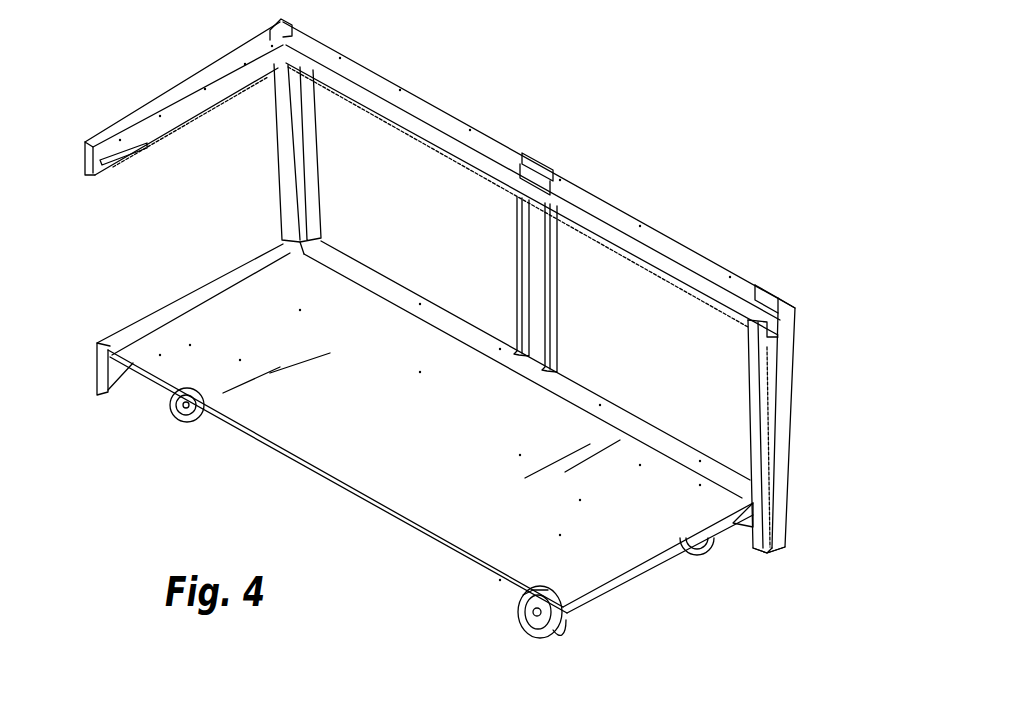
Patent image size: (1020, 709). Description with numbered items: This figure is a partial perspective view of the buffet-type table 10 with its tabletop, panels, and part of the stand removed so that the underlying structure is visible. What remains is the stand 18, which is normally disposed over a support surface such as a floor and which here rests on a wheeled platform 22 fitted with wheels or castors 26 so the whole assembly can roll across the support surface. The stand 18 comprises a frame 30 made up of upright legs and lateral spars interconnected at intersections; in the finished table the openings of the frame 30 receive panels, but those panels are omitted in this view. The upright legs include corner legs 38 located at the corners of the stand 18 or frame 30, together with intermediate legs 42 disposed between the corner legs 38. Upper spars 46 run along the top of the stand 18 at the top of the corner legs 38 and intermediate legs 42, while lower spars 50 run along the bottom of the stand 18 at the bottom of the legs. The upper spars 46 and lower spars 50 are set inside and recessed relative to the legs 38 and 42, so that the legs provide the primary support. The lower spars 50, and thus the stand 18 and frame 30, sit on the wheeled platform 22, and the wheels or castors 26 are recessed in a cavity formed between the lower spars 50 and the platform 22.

The buffet-type table 10 is at (622, 190).
The stand 18 is at (142, 108).
The frame 30 is at (133, 153).
The upper spars 46 is at (349, 66).
The intermediate legs 42 is at (511, 247).
The lower spars 50 is at (382, 284).
The corner legs 38 is at (778, 377).
The wheeled platform 22 is at (283, 422).
The wheels or castors 26 is at (557, 637).